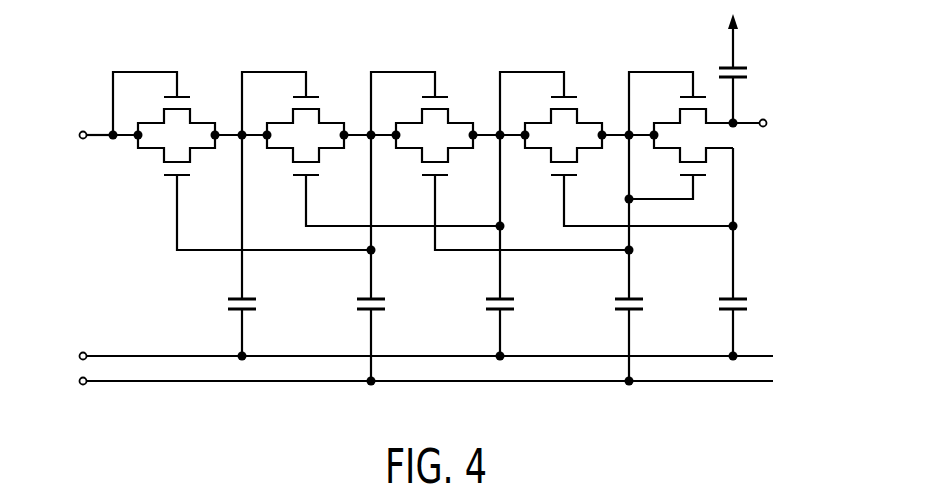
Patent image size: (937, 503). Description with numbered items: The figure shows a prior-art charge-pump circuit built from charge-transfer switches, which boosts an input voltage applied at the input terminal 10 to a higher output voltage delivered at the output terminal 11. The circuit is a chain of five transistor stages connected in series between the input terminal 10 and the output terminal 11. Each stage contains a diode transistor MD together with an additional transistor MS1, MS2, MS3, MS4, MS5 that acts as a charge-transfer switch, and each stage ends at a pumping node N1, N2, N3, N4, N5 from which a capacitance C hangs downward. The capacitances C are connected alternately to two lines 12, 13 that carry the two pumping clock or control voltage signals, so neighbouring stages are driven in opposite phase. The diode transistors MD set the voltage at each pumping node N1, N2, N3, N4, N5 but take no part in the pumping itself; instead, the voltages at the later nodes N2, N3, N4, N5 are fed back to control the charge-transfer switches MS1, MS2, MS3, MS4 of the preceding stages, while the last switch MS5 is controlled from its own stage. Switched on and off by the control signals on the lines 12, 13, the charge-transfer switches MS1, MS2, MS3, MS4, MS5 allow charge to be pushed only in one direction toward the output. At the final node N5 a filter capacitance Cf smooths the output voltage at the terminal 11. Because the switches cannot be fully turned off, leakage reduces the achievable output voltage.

The input terminal 10 is at (80, 132).
The output terminal 11 is at (766, 120).
The first supply/clock line 12 is at (80, 353).
The second supply/clock line 13 is at (86, 385).
The diode transistor MD is at (183, 95).
The charge-transfer switch MS1 is at (187, 176).
The charge-transfer switch MS2 is at (316, 176).
The charge-transfer switch MS3 is at (445, 176).
The charge-transfer switch MS4 is at (574, 176).
The charge-transfer switch MS5 is at (703, 176).
The pumping node N1 is at (238, 140).
The pumping node N2 is at (367, 140).
The pumping node N3 is at (496, 140).
The pumping node N4 is at (625, 140).
The pumping node N5 is at (736, 229).
The capacitance C is at (232, 298).
The filter capacitor Cf is at (741, 67).